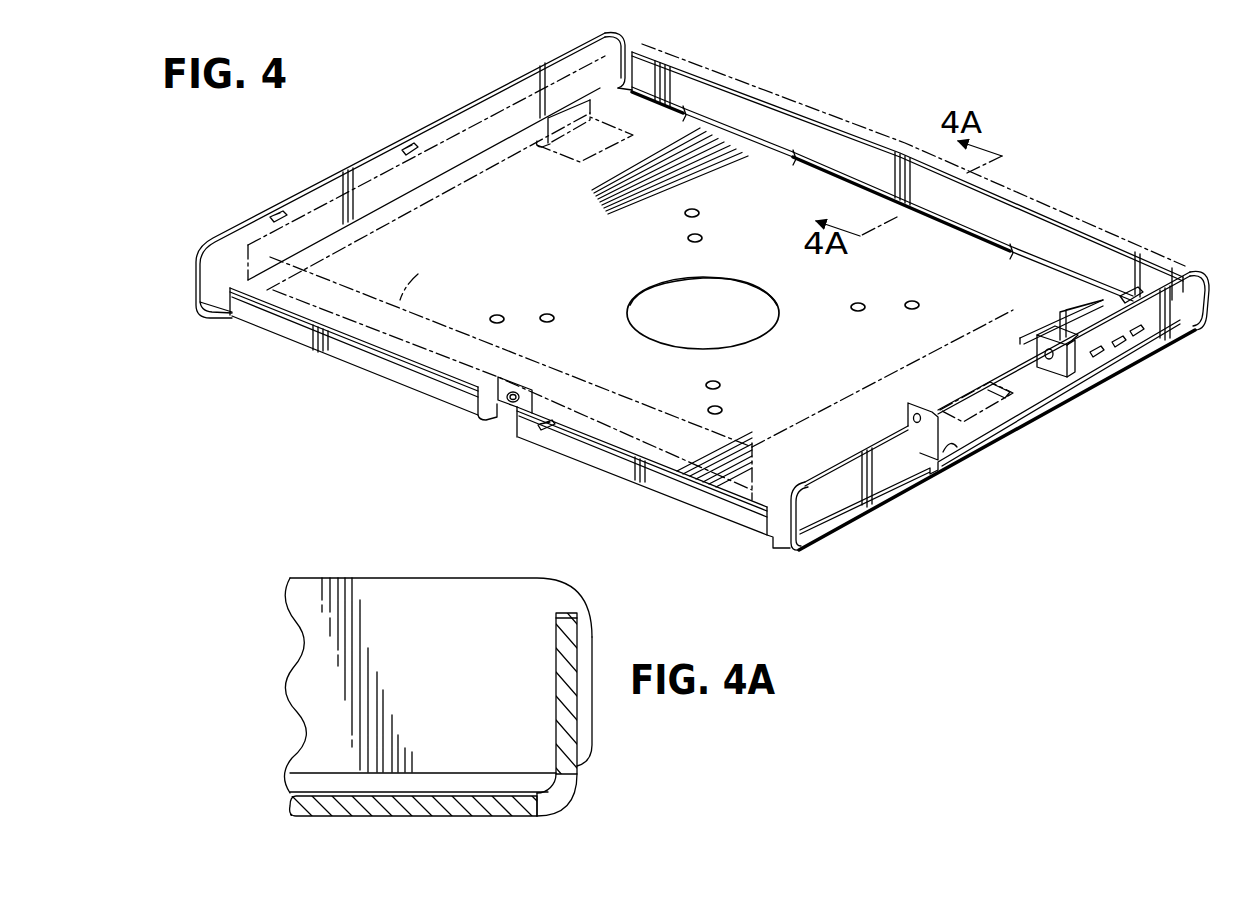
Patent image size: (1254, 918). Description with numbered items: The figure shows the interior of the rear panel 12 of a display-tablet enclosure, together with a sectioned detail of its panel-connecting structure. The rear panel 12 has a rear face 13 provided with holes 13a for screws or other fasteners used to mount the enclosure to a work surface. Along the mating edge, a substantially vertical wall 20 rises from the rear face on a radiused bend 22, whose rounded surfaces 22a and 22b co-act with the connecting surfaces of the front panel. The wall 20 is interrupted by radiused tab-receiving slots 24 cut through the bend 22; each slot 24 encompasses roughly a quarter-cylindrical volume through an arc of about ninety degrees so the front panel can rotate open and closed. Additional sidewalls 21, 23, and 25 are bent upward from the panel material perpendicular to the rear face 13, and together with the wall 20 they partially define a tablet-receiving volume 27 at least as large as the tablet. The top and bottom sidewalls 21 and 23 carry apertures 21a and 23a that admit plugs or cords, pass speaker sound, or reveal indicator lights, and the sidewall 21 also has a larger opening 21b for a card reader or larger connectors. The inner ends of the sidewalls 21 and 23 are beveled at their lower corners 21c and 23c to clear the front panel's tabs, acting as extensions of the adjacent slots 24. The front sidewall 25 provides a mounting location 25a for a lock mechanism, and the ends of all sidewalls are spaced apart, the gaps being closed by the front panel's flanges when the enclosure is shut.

In FIG. 4, the rear panel 12 is at (1133, 191).
In FIG. 4A, the rear panel 12 is at (447, 808).
In FIG. 4, the rear face 13 is at (527, 173).
In FIG. 4, the holes 13a is at (547, 314).
In FIG. 4, the vertical wall 20 is at (807, 140).
In FIG. 4A, the vertical wall 20 is at (567, 722).
In FIG. 4, the top sidewall 21 is at (895, 473).
In FIG. 4, the apertures 21a is at (1097, 357).
In FIG. 4, the larger opening 21b is at (1024, 388).
In FIG. 4, the beveled lower corner 21c is at (1210, 317).
In FIG. 4, the radiused bend 22 is at (743, 138).
In FIG. 4A, the radiused bend 22 is at (576, 790).
In FIG. 4A, the radiused surface 22a is at (572, 809).
In FIG. 4A, the radiused surface 22b is at (546, 785).
In FIG. 4, the bottom sidewall 23 is at (475, 145).
In FIG. 4A, the bottom sidewall 23 is at (462, 628).
In FIG. 4, the apertures 23a is at (405, 147).
In FIG. 4, the beveled lower corner 23c is at (636, 46).
In FIG. 4A, the beveled lower corner 23c is at (583, 755).
In FIG. 4, the tab-receiving slot 24 is at (673, 108).
In FIG. 4A, the tab-receiving slot 24 is at (547, 808).
In FIG. 4, the front sidewall 25 is at (438, 388).
In FIG. 4, the mounting location 25a is at (510, 401).
In FIG. 4, the tablet-receiving volume 27 is at (414, 275).